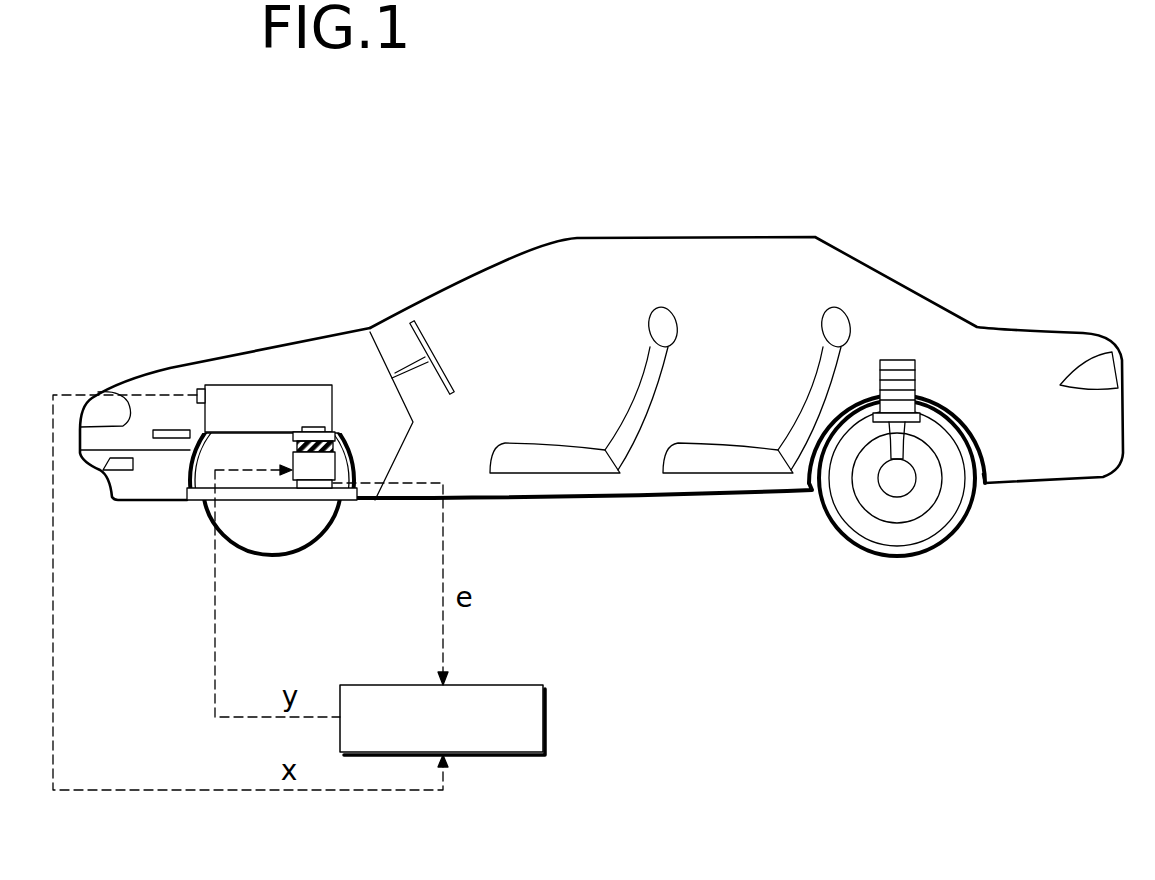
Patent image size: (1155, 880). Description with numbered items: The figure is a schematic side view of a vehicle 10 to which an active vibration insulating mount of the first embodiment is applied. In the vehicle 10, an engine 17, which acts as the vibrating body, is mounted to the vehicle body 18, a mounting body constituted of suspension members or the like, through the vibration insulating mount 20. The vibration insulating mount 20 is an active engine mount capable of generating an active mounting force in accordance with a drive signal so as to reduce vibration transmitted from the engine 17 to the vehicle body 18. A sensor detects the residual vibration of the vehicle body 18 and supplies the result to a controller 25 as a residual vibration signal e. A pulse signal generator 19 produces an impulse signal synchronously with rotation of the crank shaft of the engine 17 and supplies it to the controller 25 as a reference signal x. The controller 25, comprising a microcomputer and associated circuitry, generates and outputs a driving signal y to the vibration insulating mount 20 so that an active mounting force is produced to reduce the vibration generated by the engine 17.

The vehicle 10 is at (646, 222).
The engine 17 is at (240, 385).
The vehicle body 18 is at (316, 503).
The pulse signal generator 19 is at (195, 390).
The vibration insulating mount 20 is at (323, 467).
The controller 25 is at (546, 721).